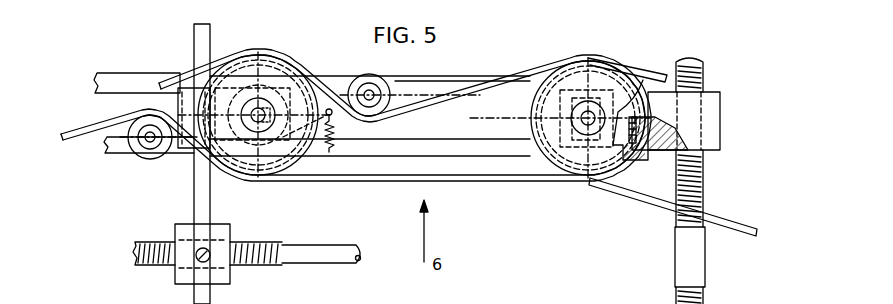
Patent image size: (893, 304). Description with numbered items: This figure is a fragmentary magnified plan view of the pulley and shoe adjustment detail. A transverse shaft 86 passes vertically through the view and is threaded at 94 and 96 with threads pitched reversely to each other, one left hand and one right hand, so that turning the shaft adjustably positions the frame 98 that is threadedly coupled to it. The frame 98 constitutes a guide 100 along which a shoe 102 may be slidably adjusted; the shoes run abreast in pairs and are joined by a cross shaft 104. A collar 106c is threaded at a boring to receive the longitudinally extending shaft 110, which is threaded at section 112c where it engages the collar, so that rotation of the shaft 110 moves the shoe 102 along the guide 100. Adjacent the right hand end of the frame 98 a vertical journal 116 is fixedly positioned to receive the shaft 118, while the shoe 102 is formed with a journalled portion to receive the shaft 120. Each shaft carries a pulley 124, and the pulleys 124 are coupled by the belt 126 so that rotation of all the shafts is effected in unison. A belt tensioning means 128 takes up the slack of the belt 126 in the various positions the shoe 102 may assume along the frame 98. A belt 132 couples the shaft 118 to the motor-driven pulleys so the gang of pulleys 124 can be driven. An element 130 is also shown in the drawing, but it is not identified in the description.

The transverse shaft 86 is at (675, 242).
The thread 94 is at (705, 72).
The thread 96 is at (705, 293).
The frame 98 is at (721, 114).
The guide 100 is at (108, 78).
The shoe 102 is at (181, 104).
The cross shaft 104 is at (196, 44).
The collar 106c is at (188, 230).
The longitudinally extending shaft 110 is at (318, 250).
The threaded section 112c is at (150, 266).
The vertical journal 116 is at (560, 119).
The shaft 118 is at (590, 110).
The shaft 120 is at (257, 108).
The pulley 124 is at (256, 170).
The belt 126 is at (80, 127).
The belt tensioning means 128 is at (340, 85).
The clamp bracket 130 is at (601, 170).
The belt 132 is at (728, 216).